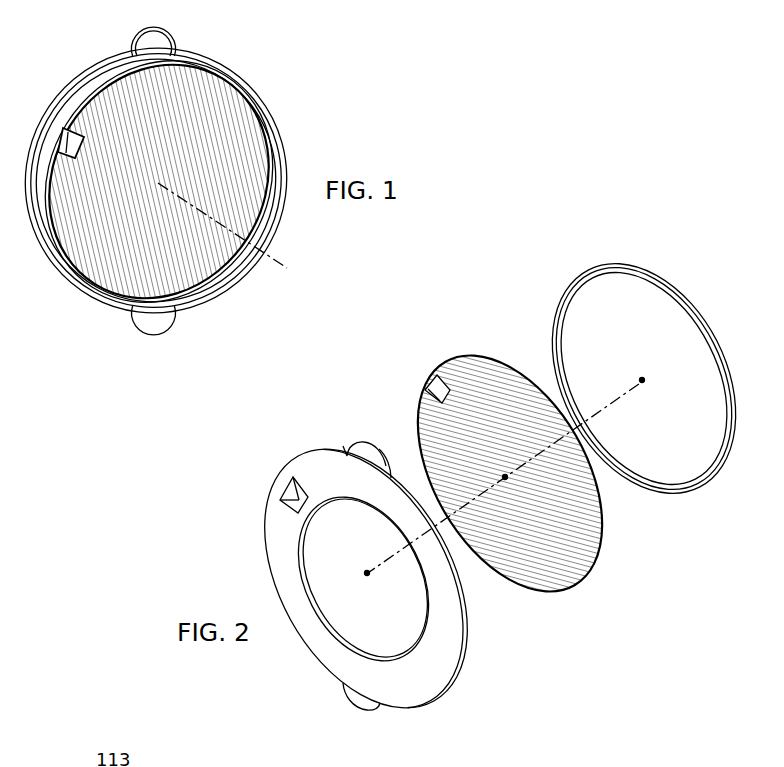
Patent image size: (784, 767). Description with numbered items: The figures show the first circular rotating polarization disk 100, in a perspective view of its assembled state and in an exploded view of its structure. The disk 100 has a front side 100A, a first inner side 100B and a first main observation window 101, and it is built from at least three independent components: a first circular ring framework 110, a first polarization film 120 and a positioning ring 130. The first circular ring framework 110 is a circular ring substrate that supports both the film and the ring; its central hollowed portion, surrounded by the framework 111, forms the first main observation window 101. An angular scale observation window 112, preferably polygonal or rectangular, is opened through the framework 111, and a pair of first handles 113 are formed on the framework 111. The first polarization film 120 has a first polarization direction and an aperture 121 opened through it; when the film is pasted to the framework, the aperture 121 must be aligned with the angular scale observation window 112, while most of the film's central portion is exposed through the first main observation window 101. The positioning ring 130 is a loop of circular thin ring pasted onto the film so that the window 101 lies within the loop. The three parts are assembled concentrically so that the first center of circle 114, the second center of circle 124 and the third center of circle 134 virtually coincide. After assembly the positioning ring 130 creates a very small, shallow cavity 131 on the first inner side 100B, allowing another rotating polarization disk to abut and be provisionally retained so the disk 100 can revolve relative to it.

In FIG. 1, the first circular rotating polarization disk 100 is at (92, 352).
In FIG. 2, the first circular rotating polarization disk 100 is at (652, 623).
In FIG. 2, the front side 100A is at (423, 535).
In FIG. 1, the first inner side 100B is at (103, 187).
In FIG. 2, the first main observation window 101 is at (456, 502).
In FIG. 2, the first circular ring framework 110 is at (433, 697).
In FIG. 2, the framework 111 is at (363, 575).
In FIG. 2, the angular scale observation window 112 is at (291, 486).
In FIG. 2, the first handles 113 is at (357, 448).
In FIG. 2, the first center of circle 114 is at (368, 574).
In FIG. 2, the first polarization film 120 is at (509, 473).
In FIG. 2, the aperture 121 is at (428, 384).
In FIG. 2, the second center of circle 124 is at (506, 478).
In FIG. 2, the positioning ring 130 is at (702, 486).
In FIG. 1, the cavity 131 is at (158, 182).
In FIG. 2, the third center of circle 134 is at (643, 382).